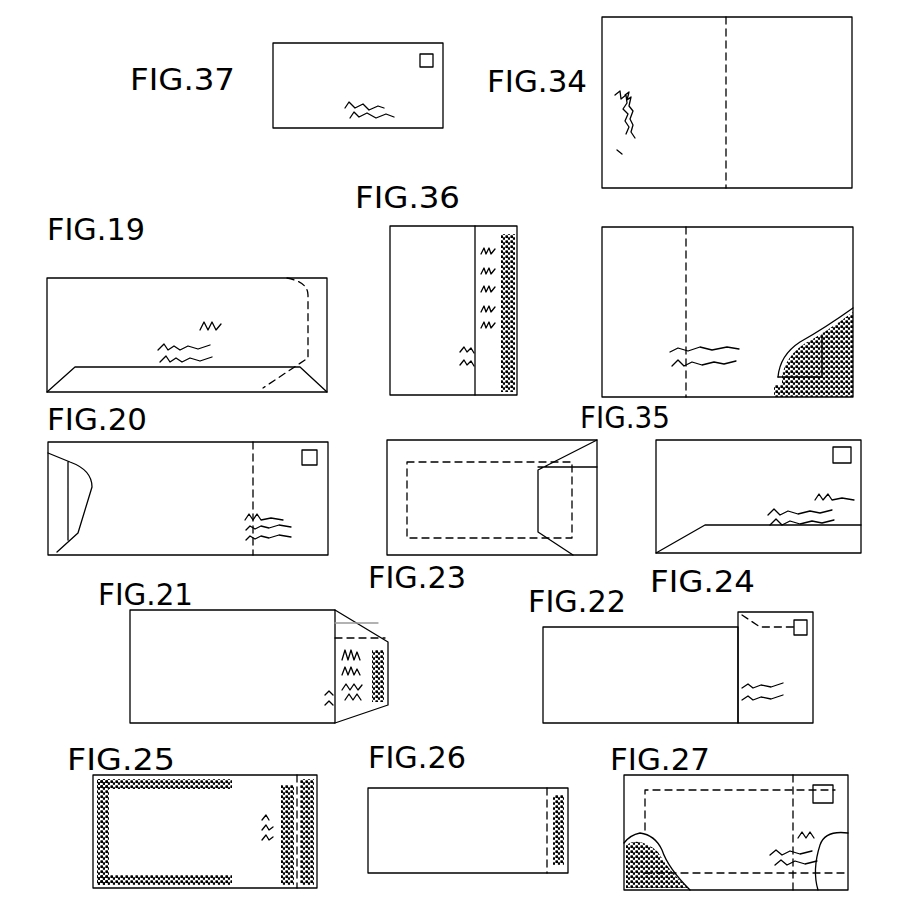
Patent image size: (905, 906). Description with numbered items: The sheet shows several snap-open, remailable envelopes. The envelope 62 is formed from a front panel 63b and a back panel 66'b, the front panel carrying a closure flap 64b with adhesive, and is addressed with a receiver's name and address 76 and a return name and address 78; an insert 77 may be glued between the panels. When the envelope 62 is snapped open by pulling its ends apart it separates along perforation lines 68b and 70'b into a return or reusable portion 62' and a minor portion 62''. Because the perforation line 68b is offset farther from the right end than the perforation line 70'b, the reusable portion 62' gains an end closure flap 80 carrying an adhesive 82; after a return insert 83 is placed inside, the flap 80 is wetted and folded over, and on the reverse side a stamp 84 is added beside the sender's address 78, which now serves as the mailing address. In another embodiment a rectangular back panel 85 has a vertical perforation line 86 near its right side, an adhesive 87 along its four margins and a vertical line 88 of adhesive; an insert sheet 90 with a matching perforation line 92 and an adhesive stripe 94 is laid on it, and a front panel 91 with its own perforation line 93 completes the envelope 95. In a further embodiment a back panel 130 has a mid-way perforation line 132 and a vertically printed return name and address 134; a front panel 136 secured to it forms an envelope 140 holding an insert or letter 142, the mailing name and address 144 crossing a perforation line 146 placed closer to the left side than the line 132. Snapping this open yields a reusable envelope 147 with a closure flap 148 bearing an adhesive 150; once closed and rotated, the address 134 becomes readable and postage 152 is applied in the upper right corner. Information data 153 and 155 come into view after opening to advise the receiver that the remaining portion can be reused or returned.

In FIG. 19, the envelope 62 is at (187, 304).
In FIG. 20, the envelope 62 is at (188, 518).
In FIG. 23, the return or reusable portion 62' is at (492, 497).
In FIG. 24, the return or reusable portion 62' is at (758, 515).
In FIG. 21, the return or reusable portion 62' is at (205, 666).
In FIG. 22, the minor portion 62'' is at (803, 667).
In FIG. 20, the front panel 63b is at (222, 548).
In FIG. 19, the closure flap 64b is at (220, 378).
In FIG. 19, the back panel 66'b is at (111, 268).
In FIG. 20, the back panel 66'b is at (56, 567).
In FIG. 20, the perforation line 68b is at (250, 478).
In FIG. 19, the perforation line 70'b is at (284, 333).
In FIG. 20, the receiver's name and address 76 is at (245, 528).
In FIG. 20, the insert 77 is at (87, 497).
In FIG. 22, the insert 77 is at (642, 677).
In FIG. 19, the return name and address 78 is at (147, 343).
In FIG. 24, the return name and address 78 is at (758, 512).
In FIG. 23, the closure flap 80 is at (583, 503).
In FIG. 21, the closure flap 80 is at (390, 656).
In FIG. 21, the adhesive 82 is at (375, 680).
In FIG. 23, the return insert 83 is at (470, 462).
In FIG. 24, the stamp 84 is at (833, 455).
In FIG. 25, the back panel 85 is at (190, 819).
In FIG. 25, the perforation line 86 is at (283, 803).
In FIG. 25, the adhesive 87 is at (140, 880).
In FIG. 25, the line of adhesive 88 is at (283, 845).
In FIG. 26, the insert sheet 90 is at (447, 842).
In FIG. 27, the insert sheet 90 is at (655, 865).
In FIG. 27, the front panel 91 is at (762, 880).
In FIG. 26, the perforation line 92 is at (546, 806).
In FIG. 27, the perforation line 93 is at (790, 810).
In FIG. 26, the adhesive stripe 94 is at (557, 836).
In FIG. 27, the envelope 95 is at (797, 768).
In FIG. 34, the back panel 130 is at (600, 125).
In FIG. 35, the back panel 130 is at (830, 398).
In FIG. 34, the perforation line 132 is at (727, 112).
In FIG. 37, the return name and address 134 is at (347, 108).
In FIG. 34, the return name and address 134 is at (633, 82).
In FIG. 35, the front panel 136 is at (620, 308).
In FIG. 35, the envelope 140 is at (767, 302).
In FIG. 35, the insert or letter 142 is at (808, 360).
In FIG. 35, the mailing name and address 144 is at (720, 366).
In FIG. 35, the perforation line 146 is at (688, 265).
In FIG. 37, the reusable portion or envelope 147 is at (418, 130).
In FIG. 36, the reusable portion or envelope 147 is at (454, 336).
In FIG. 36, the closure flap 148 is at (493, 360).
In FIG. 36, the adhesive 150 is at (505, 268).
In FIG. 37, the postage 152 is at (435, 60).
In FIG. 21, the postage 152 is at (390, 703).
In FIG. 25, the information data 153 is at (262, 830).
In FIG. 36, the information data 155 is at (488, 250).